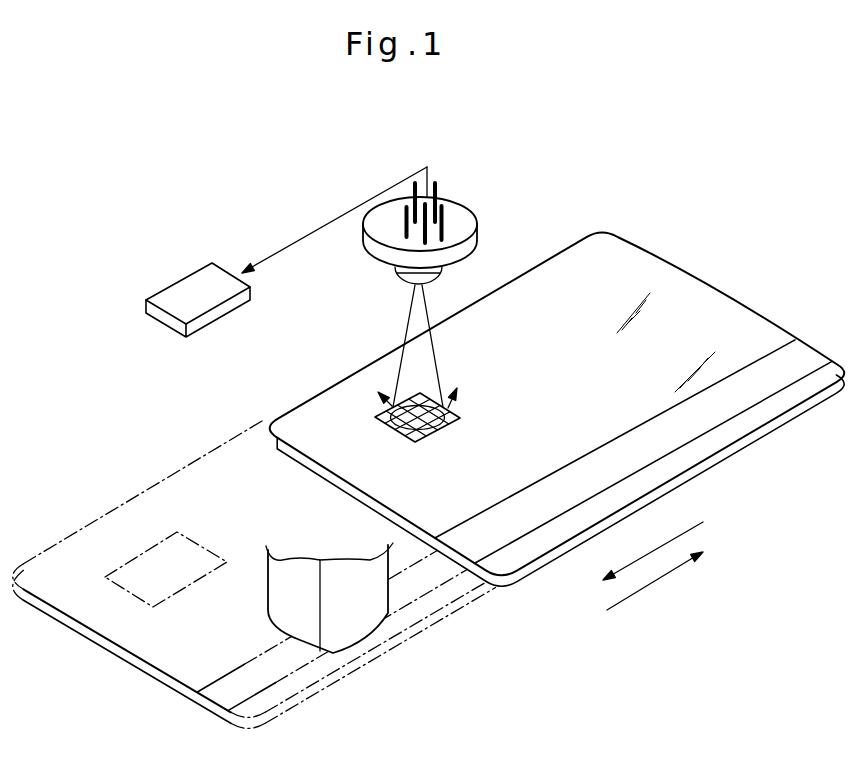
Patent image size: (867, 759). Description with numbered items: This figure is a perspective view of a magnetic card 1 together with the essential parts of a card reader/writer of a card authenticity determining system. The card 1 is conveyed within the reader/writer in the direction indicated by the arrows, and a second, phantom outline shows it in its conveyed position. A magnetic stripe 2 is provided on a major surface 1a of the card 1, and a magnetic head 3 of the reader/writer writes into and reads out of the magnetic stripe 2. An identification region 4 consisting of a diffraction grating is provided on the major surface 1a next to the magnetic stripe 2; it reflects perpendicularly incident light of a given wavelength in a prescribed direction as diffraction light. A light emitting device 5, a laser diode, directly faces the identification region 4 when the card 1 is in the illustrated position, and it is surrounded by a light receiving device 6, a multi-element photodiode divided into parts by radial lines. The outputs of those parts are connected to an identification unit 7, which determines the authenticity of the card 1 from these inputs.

The magnetic card 1 is at (271, 401).
The major surface 1a is at (775, 336).
The magnetic stripe 2 is at (753, 395).
The magnetic head 3 is at (383, 617).
The identification region 4 is at (463, 412).
The light emitting device 5 is at (407, 280).
The light receiving device 6 is at (470, 227).
The identification unit 7 is at (185, 280).